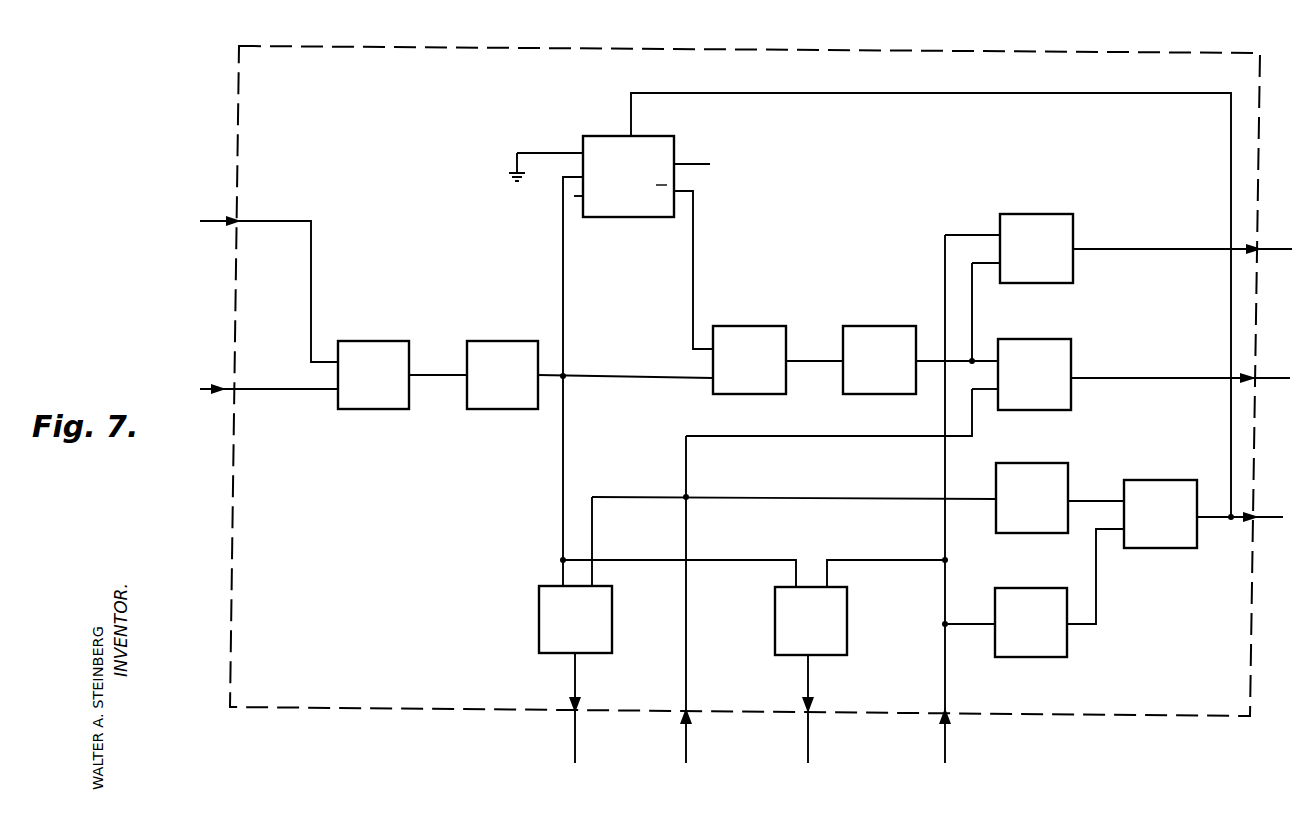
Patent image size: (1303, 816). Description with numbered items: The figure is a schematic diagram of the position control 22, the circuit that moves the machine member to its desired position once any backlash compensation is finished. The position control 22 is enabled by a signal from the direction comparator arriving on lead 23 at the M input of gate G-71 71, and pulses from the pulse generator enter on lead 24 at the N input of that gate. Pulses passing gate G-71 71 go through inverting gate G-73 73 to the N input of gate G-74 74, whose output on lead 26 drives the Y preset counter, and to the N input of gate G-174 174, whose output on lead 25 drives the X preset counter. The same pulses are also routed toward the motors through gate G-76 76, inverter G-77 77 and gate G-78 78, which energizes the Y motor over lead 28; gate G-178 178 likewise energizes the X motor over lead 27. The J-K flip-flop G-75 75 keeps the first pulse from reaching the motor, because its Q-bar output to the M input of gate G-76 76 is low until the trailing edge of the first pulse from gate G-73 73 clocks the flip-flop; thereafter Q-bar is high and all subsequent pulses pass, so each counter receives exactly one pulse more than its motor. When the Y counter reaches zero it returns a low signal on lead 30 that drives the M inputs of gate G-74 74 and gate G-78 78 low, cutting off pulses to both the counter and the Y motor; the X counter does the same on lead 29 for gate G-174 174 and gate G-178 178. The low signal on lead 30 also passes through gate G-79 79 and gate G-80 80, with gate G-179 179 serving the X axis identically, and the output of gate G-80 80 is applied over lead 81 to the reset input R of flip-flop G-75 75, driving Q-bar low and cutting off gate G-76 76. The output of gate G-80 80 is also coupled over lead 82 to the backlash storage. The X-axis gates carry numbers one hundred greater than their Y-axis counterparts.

The position control 22 is at (840, 53).
The lead 23 is at (212, 227).
The lead 24 is at (214, 388).
The lead 25 is at (577, 733).
The lead 26 is at (809, 726).
The lead 27 is at (1282, 377).
The lead 28 is at (1293, 229).
The lead 29 is at (687, 728).
The lead 30 is at (946, 728).
The lead 81 is at (905, 95).
The lead 82 is at (1288, 498).
The gate G- 71 is at (373, 375).
The inverting gate G- 73 is at (502, 375).
The gate G- 74 is at (811, 621).
The J-K flip-flop G- 75 is at (642, 176).
The gate G- 76 is at (749, 360).
The inverter G- 77 is at (879, 360).
The gate G- 78 is at (1036, 248).
The gate G- 79 is at (1031, 622).
The gate G- 80 is at (1160, 514).
The gate G- 174 is at (575, 619).
The gate G- 178 is at (1034, 374).
The gate G- 179 is at (1032, 498).